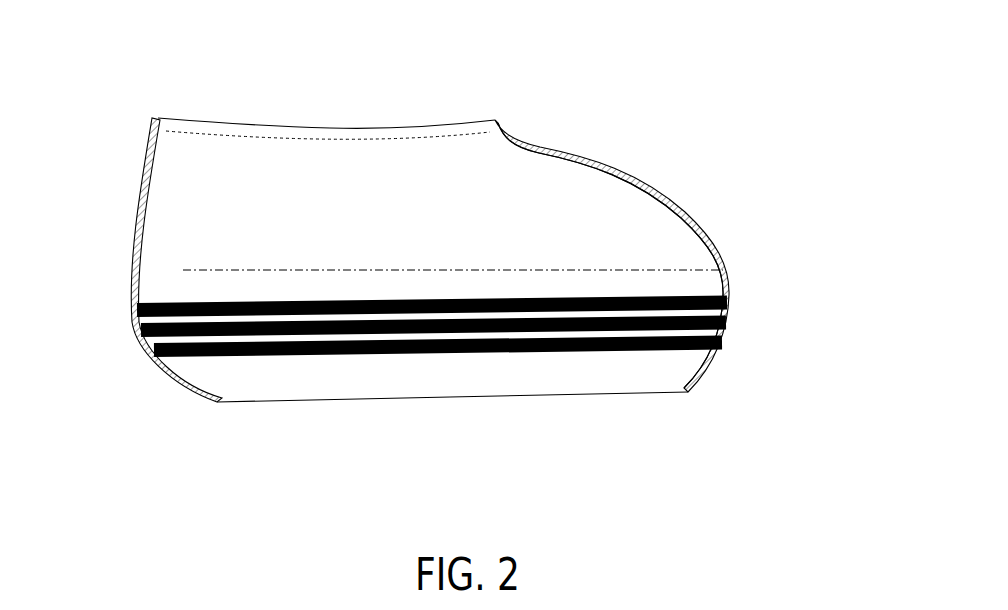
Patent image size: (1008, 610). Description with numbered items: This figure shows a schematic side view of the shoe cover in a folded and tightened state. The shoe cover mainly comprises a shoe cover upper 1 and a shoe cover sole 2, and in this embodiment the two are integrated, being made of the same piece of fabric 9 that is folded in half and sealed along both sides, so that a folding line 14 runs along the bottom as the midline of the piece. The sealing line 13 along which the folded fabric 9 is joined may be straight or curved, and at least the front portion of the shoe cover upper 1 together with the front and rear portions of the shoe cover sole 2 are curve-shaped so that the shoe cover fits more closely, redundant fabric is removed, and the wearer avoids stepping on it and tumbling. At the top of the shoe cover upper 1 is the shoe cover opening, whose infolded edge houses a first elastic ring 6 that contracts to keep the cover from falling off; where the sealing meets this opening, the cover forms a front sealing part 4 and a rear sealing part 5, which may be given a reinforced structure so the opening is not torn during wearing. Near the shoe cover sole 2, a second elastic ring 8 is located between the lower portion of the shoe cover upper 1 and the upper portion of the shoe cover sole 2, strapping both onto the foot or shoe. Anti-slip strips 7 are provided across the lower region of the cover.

The shoe cover upper 1 is at (673, 185).
The shoe cover sole 2 is at (553, 365).
The front sealing part 4 is at (500, 120).
The rear sealing part 5 is at (157, 128).
The first elastic ring 6 is at (352, 135).
The anti-slip strip 7 is at (215, 357).
The second elastic ring 8 is at (183, 273).
The fabric 9 is at (562, 197).
The sealing line 13 is at (727, 253).
The folding line 14 is at (330, 398).